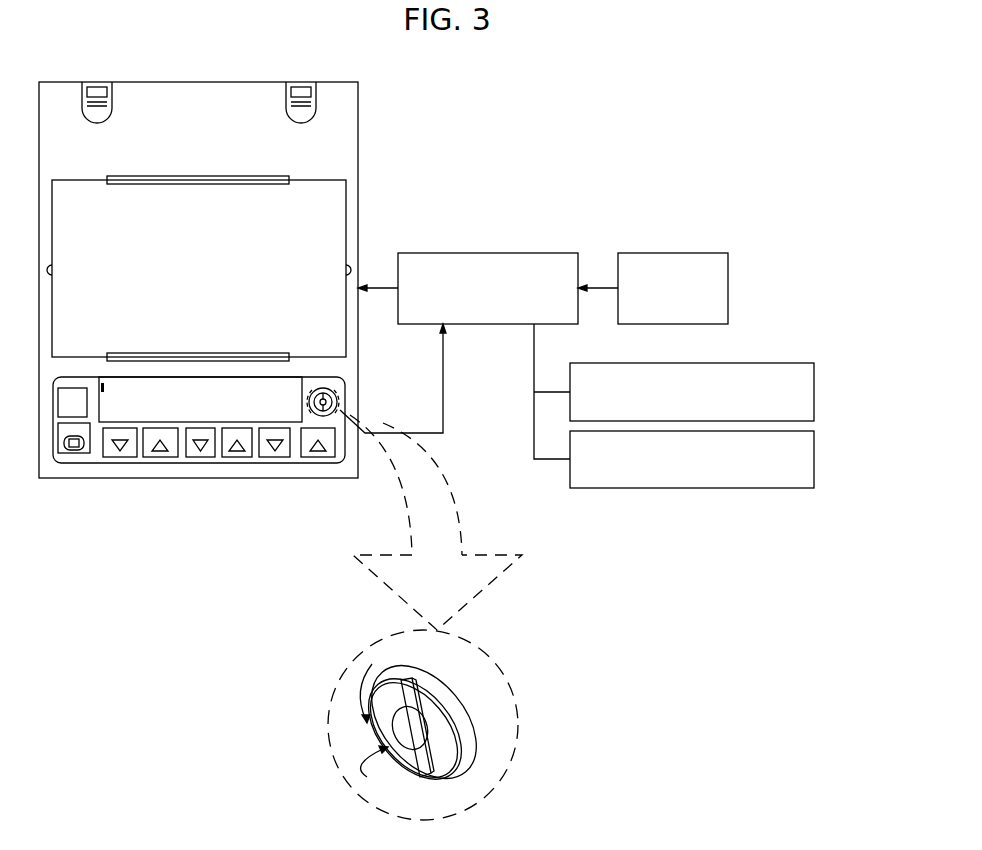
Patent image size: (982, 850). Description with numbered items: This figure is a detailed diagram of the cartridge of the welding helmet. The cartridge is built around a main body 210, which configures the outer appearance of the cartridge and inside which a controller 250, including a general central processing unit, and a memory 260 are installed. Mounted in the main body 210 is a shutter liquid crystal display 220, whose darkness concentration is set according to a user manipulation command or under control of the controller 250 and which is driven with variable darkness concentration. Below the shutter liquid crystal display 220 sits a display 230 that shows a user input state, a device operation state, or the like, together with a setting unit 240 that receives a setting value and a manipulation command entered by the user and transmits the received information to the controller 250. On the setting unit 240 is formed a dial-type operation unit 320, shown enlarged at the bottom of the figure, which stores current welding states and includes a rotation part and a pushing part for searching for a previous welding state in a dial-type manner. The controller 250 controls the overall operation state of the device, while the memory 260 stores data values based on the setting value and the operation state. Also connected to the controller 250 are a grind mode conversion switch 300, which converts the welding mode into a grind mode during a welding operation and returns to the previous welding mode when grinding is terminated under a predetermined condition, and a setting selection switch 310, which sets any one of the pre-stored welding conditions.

The main body 210 is at (346, 139).
The shutter liquid crystal display (LCD) 220 is at (334, 192).
The display 230 is at (195, 415).
The setting unit 240 is at (287, 453).
The controller 250 is at (489, 253).
The memory 260 is at (673, 253).
The grind mode conversion switch 300 is at (814, 392).
The setting selection switch 310 is at (814, 459).
The dial-type operation unit 320 is at (482, 685).